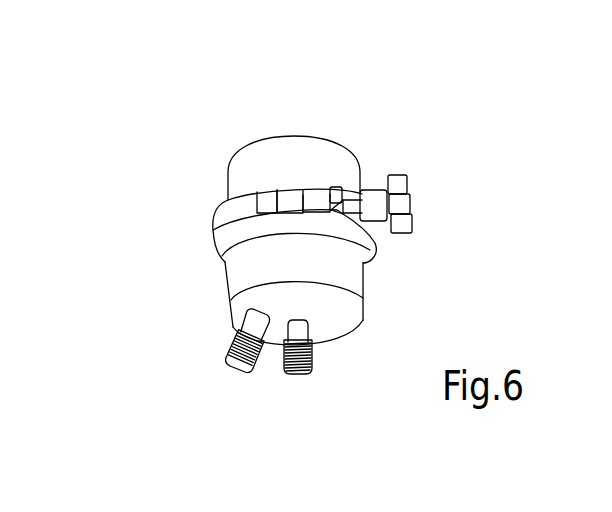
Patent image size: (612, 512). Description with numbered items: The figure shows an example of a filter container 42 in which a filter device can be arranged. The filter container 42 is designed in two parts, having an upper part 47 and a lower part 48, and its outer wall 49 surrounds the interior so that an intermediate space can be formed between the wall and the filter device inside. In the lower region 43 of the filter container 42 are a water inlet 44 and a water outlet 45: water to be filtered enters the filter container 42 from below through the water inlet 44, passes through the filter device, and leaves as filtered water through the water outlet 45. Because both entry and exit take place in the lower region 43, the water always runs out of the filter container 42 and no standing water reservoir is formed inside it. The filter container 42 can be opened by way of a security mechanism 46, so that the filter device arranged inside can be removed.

The filter container 42 is at (293, 234).
The lower region 43 is at (215, 327).
The water inlet 44 is at (257, 363).
The water outlet 45 is at (313, 355).
The security mechanism 46 is at (397, 173).
The upper part 47 is at (227, 160).
The lower part 48 is at (363, 291).
The outer wall 49 is at (377, 263).